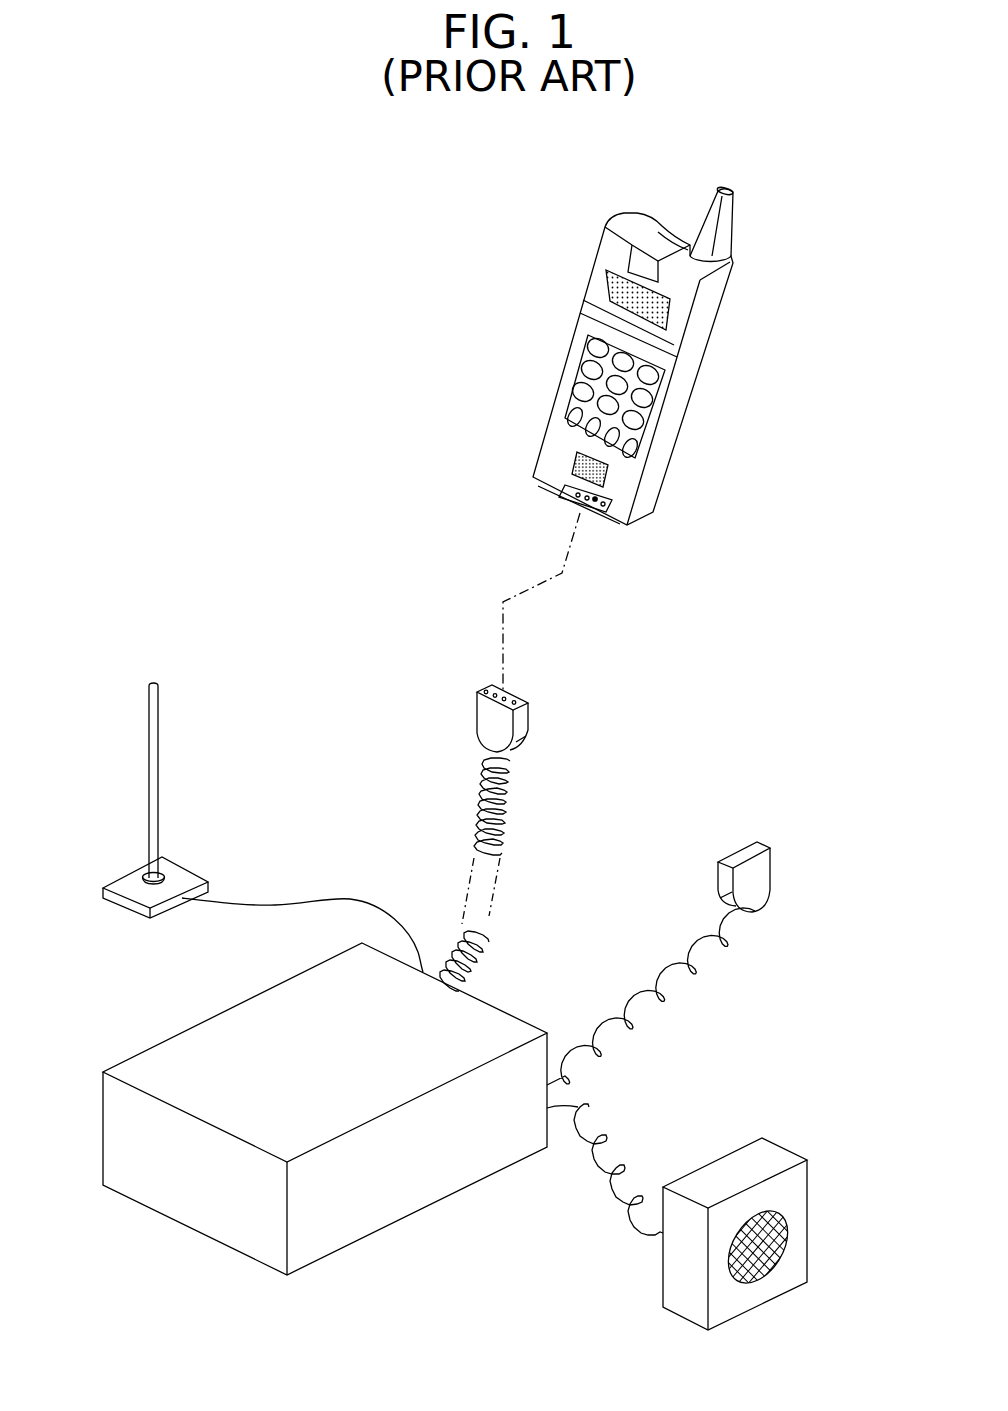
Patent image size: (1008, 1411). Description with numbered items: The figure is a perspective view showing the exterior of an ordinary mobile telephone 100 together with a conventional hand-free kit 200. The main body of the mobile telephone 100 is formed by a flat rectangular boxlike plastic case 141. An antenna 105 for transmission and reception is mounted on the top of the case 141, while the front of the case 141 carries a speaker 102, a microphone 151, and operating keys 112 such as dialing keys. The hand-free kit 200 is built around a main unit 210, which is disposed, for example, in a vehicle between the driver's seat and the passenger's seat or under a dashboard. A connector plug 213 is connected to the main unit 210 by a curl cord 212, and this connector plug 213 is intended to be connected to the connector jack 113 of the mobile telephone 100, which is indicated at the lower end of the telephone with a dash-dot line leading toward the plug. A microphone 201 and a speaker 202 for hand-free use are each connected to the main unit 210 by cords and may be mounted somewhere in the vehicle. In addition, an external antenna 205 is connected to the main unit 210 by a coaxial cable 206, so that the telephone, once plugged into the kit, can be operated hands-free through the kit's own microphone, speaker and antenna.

The mobile telephone 100 is at (411, 306).
The speaker 102 is at (620, 295).
The antenna 105 is at (722, 225).
The operating keys 112 is at (590, 368).
The connector jack 113 is at (595, 499).
The case 141 is at (700, 323).
The microphone 151 is at (608, 477).
The hand-free kit 200 is at (353, 807).
The microphone 201 is at (757, 875).
The speaker 202 is at (765, 1160).
The external antenna 205 is at (153, 750).
The coaxial cable 206 is at (275, 905).
The main unit 210 is at (427, 1162).
The curl cord 212 is at (507, 815).
The connector plug 213 is at (490, 722).